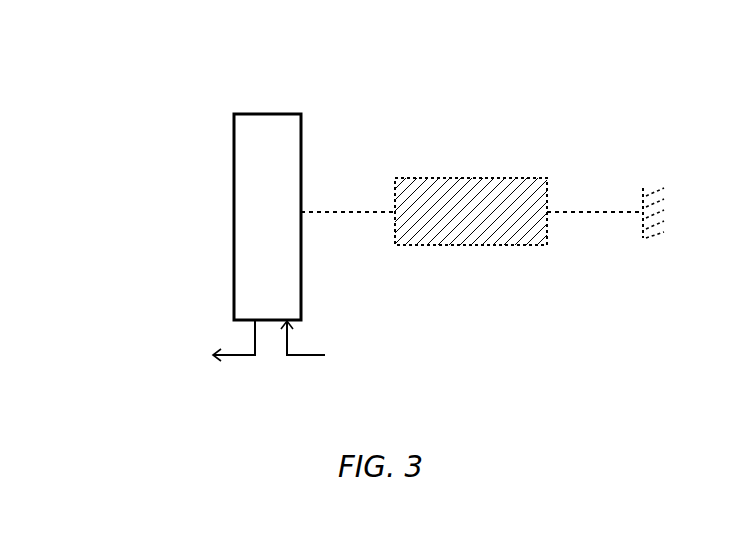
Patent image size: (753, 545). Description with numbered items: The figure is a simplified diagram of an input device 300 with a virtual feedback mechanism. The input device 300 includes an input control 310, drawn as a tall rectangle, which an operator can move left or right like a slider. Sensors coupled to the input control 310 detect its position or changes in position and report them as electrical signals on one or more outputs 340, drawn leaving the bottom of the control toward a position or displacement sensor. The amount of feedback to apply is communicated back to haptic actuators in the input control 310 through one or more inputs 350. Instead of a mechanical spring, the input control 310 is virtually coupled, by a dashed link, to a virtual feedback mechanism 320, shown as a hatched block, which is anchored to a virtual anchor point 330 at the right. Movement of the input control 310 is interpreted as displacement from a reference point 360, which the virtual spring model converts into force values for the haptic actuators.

The input device 300 is at (210, 88).
The input control 310 is at (234, 196).
The virtual feedback mechanism 320 is at (472, 178).
The virtual anchor point 330 is at (642, 188).
The outputs 340 is at (248, 358).
The inputs 350 is at (306, 358).
The reference point 360 is at (263, 218).